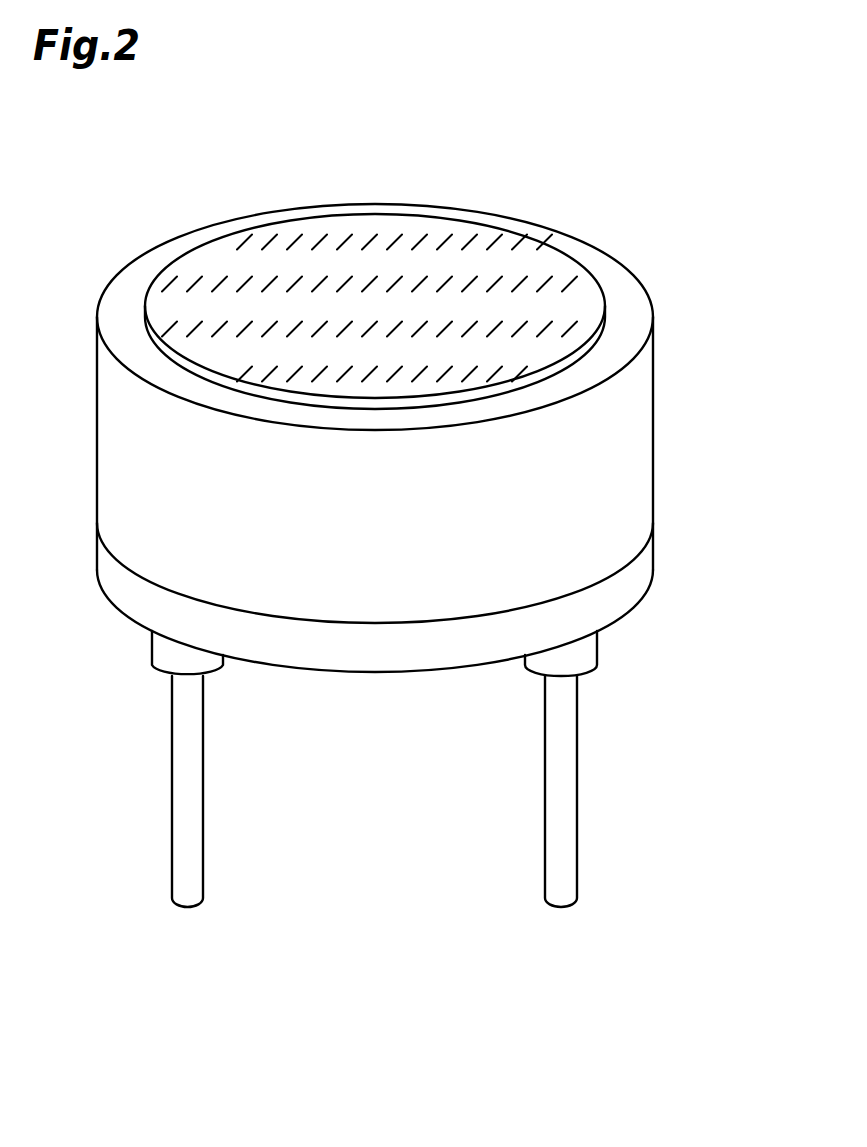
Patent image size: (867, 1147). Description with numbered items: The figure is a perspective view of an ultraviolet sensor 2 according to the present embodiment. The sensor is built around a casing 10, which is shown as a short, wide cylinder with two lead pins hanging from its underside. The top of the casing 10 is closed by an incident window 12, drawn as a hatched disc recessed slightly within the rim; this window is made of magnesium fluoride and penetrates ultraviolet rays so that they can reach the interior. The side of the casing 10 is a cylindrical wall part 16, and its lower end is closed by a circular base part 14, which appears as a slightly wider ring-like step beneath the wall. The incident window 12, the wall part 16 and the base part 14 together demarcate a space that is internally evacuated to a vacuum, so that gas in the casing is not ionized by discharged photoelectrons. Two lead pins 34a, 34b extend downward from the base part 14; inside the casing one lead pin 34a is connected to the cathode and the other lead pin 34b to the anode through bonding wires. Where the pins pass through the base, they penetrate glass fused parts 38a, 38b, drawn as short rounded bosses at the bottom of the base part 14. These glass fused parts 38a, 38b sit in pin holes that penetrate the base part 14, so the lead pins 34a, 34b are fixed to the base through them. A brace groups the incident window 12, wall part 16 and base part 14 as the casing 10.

The ultraviolet sensor 2 is at (700, 252).
The casing 10 is at (770, 253).
The incident window 12 is at (592, 300).
The base part 14 is at (642, 560).
The wall part 16 is at (642, 445).
The lead pin 34a is at (565, 783).
The lead pin 34b is at (178, 767).
The glass fused part 38a is at (578, 652).
The glass fused part 38b is at (162, 651).